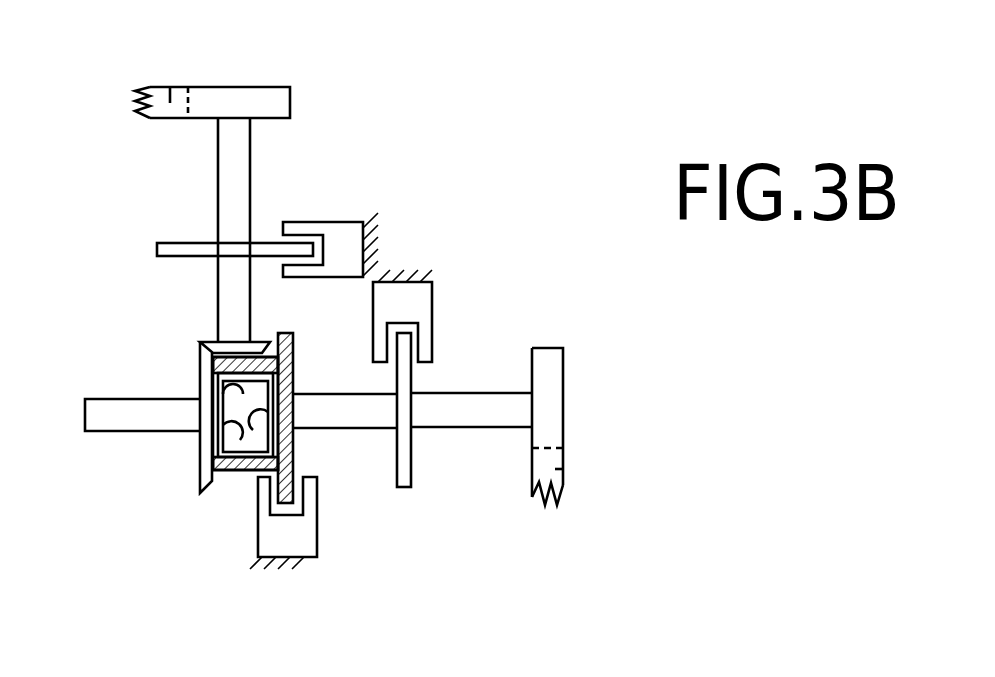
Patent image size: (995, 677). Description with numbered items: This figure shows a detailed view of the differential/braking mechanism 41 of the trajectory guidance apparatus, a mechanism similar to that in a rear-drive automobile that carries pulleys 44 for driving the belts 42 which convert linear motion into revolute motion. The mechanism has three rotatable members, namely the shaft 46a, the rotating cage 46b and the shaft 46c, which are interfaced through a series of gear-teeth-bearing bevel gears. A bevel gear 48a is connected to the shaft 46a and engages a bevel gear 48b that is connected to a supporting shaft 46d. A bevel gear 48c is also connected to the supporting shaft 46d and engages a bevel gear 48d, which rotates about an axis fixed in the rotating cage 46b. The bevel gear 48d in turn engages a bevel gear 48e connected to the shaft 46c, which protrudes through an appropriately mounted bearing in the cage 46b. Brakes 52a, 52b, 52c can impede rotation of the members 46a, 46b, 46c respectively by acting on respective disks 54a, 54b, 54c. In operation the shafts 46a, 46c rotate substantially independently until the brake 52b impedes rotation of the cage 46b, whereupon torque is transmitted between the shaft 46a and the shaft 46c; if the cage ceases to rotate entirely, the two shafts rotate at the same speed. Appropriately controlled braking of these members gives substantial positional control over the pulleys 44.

The differential/braking mechanism 41 is at (555, 107).
The belts 42 is at (170, 103).
The pulleys 44 is at (248, 87).
The shaft 46a is at (236, 174).
The rotating cage 46b is at (247, 480).
The shaft 46c is at (467, 393).
The supporting shaft 46d is at (127, 432).
The bevel gear 48a is at (214, 342).
The bevel gear 48b is at (195, 453).
The bevel gear 48c is at (223, 473).
The bevel gear 48d is at (222, 400).
The bevel gear 48e is at (293, 444).
The brake 52a is at (333, 222).
The brake 52b is at (256, 549).
The brake 52c is at (432, 303).
The disk 54a is at (157, 248).
The disk 54b is at (293, 465).
The disk 54c is at (411, 464).